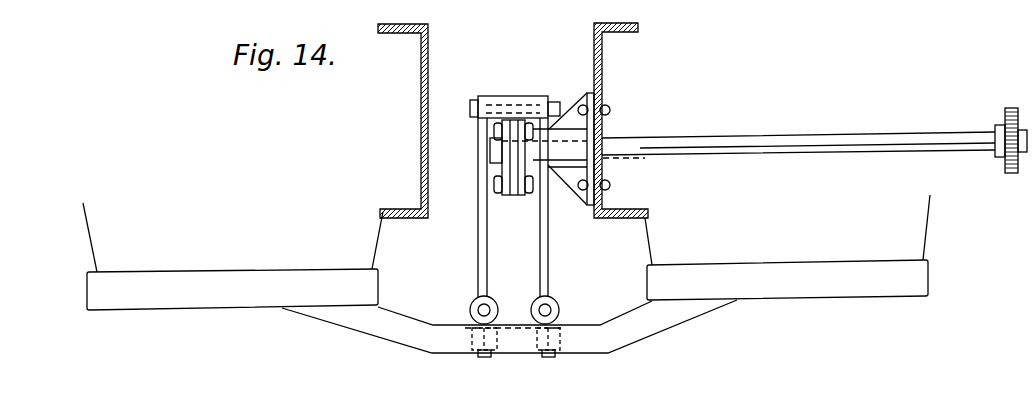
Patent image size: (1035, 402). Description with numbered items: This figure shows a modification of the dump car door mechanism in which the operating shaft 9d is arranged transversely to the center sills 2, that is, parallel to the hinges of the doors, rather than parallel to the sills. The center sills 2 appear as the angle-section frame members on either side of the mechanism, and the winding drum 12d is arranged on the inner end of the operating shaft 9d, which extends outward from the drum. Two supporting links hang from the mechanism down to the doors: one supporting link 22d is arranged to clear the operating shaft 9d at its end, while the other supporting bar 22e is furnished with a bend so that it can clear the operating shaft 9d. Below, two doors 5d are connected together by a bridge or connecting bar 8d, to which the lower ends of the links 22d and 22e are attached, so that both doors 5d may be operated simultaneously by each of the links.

The center sills 2 is at (419, 109).
The doors 5d is at (843, 290).
The bridge or connecting bar 8d is at (509, 328).
The operating shaft 9d is at (688, 145).
The winding drum 12d is at (498, 172).
The supporting link or bar 22d is at (478, 264).
The supporting bar 22e is at (550, 266).